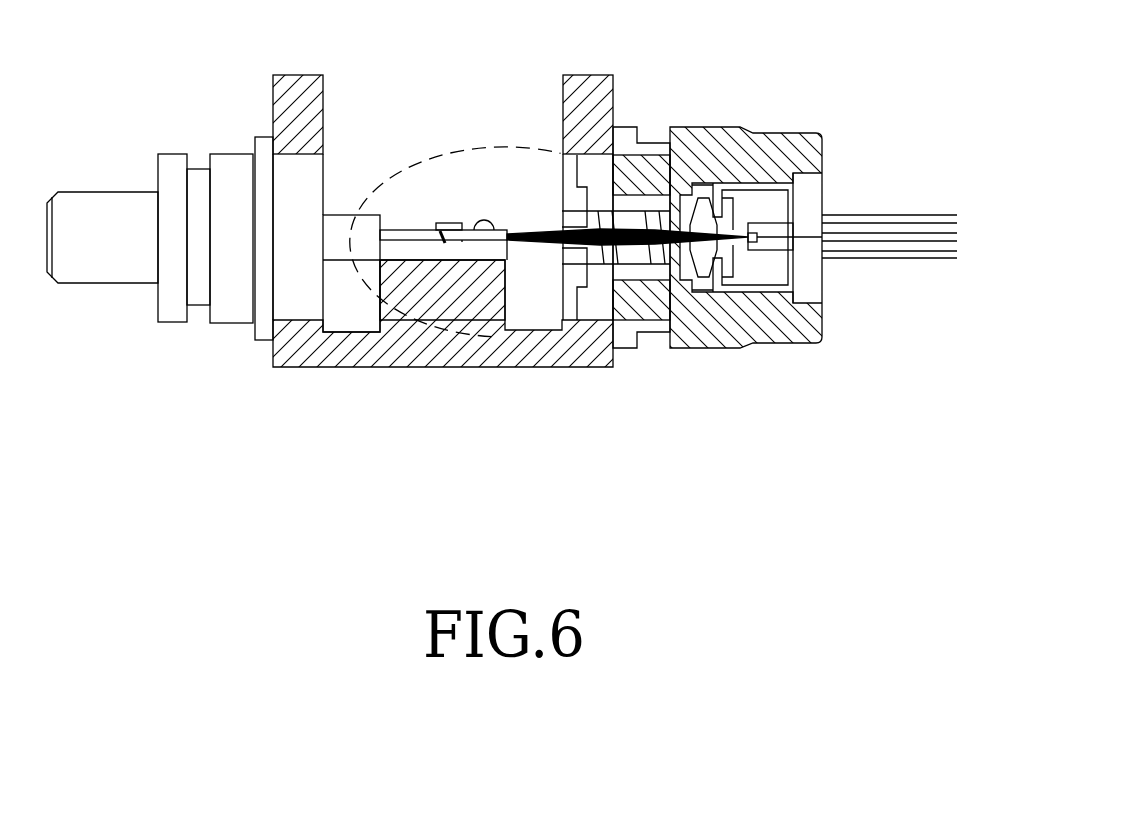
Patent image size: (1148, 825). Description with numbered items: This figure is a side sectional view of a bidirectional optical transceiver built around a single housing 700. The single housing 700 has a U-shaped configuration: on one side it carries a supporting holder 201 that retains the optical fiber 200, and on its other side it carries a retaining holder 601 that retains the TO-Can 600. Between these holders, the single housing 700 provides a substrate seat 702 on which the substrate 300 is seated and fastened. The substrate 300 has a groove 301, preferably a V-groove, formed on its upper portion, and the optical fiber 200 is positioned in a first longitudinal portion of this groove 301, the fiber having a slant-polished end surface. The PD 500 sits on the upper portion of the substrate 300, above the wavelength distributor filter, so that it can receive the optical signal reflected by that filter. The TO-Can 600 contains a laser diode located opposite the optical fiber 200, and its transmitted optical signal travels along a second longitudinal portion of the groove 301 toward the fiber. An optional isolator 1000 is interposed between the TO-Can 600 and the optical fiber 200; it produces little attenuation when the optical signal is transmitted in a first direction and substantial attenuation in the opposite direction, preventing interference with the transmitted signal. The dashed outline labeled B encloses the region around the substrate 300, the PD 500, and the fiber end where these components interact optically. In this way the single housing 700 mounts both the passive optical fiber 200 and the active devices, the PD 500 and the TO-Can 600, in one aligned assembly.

The supporting holder 201 is at (232, 156).
The optical fiber 200 is at (403, 231).
The PD 500 is at (447, 223).
The substrate 300 is at (505, 247).
The groove 301 is at (474, 230).
The optical module region B is at (483, 143).
The retaining holder 601 is at (621, 137).
The TO-Can 600 is at (772, 134).
The single housing 700 is at (355, 367).
The substrate seat 702 is at (417, 318).
The isolator 1000 is at (655, 277).